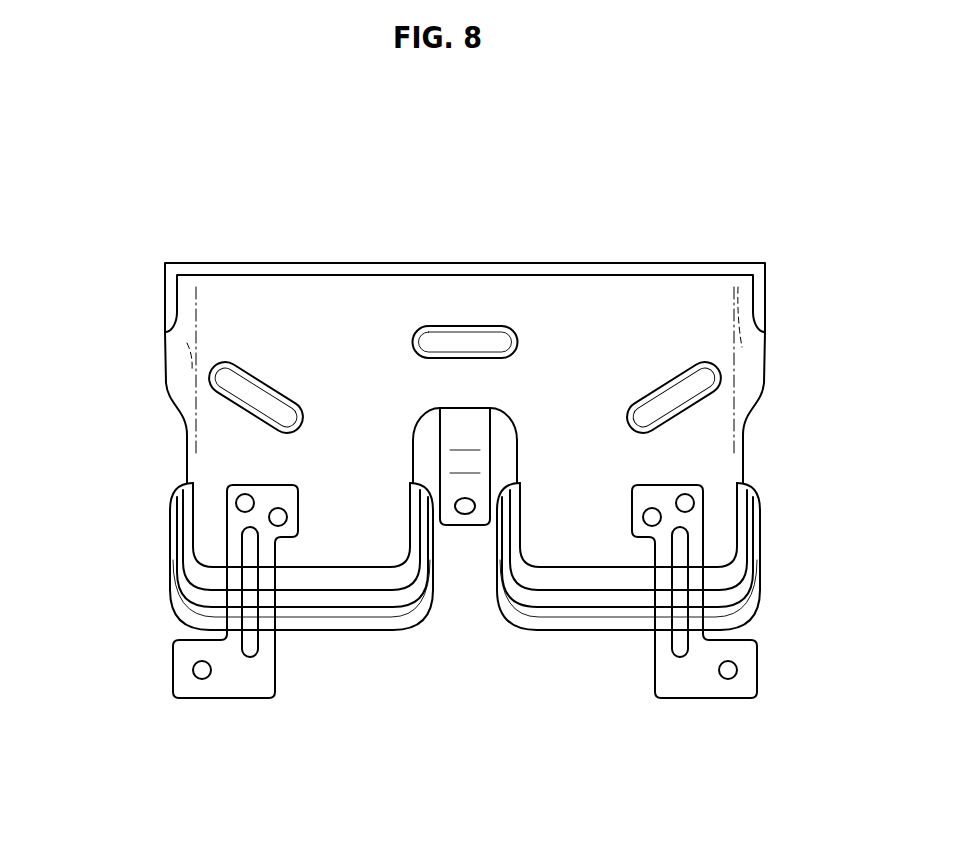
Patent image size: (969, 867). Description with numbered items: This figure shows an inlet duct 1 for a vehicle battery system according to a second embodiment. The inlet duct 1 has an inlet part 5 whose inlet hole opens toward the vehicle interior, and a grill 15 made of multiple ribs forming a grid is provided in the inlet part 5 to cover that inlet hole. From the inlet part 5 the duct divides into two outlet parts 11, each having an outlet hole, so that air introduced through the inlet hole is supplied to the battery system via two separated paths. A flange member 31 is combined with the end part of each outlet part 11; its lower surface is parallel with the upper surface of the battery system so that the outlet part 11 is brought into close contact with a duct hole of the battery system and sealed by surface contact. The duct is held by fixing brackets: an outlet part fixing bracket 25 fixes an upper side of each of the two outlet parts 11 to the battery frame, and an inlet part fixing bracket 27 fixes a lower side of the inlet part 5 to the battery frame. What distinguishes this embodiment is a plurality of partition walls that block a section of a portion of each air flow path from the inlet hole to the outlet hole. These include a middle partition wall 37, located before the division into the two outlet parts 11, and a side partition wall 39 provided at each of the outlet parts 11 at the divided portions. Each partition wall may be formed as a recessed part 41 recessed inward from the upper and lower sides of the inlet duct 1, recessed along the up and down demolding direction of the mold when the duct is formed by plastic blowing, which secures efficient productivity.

The inlet duct 1 is at (142, 453).
The inlet part 5 is at (235, 297).
The outlet part 11 is at (353, 538).
The grill 15 is at (583, 269).
The outlet part fixing bracket 25 is at (228, 688).
The inlet part fixing bracket 27 is at (468, 523).
The flange member 31 is at (175, 590).
The middle partition wall 37 is at (427, 327).
The side partition wall 39 is at (217, 378).
The recessed part 41 is at (484, 310).